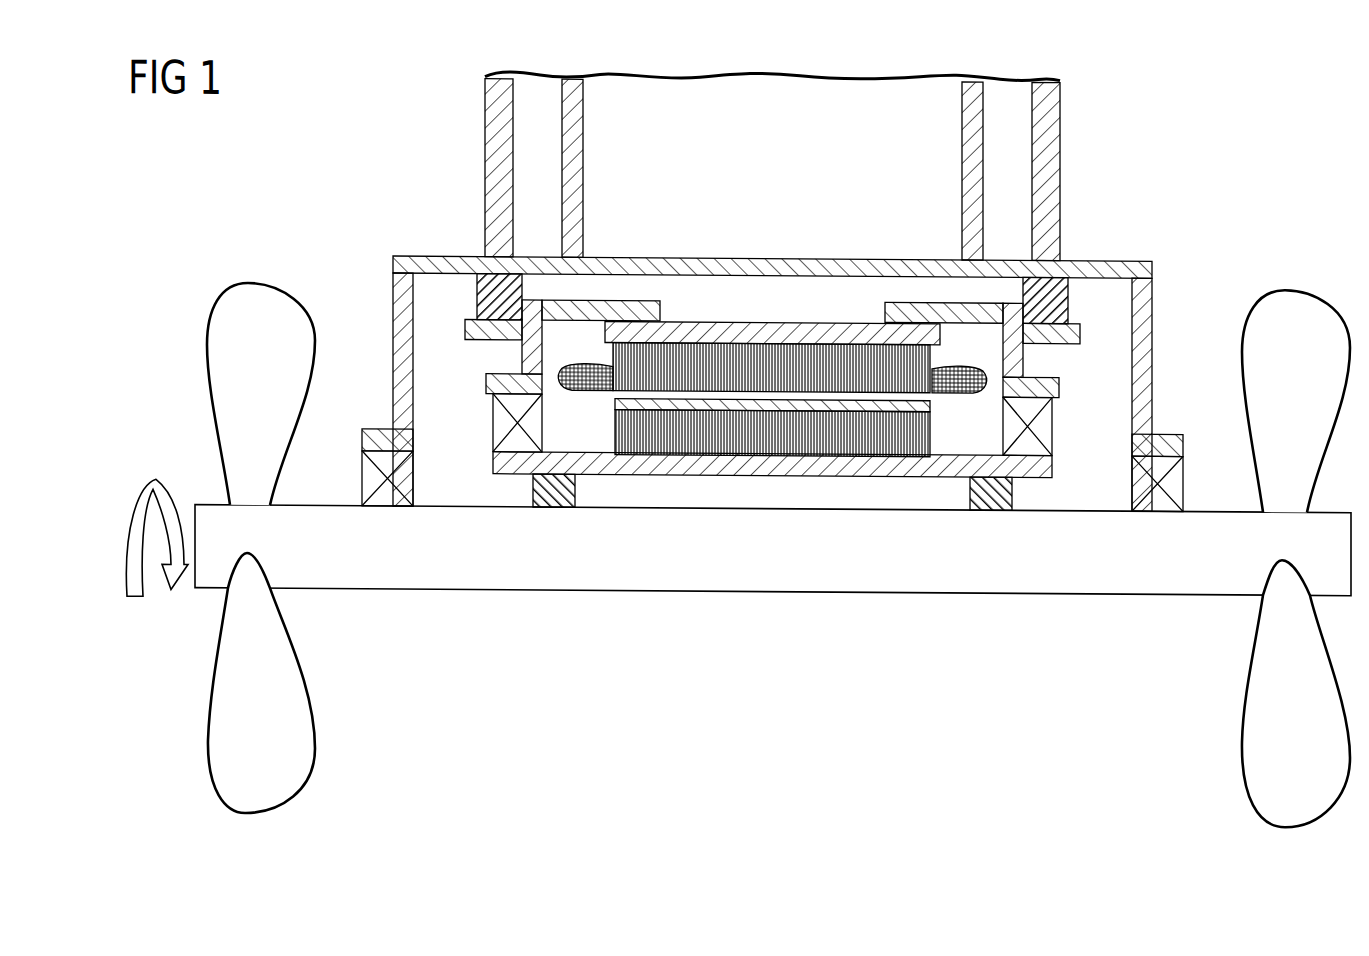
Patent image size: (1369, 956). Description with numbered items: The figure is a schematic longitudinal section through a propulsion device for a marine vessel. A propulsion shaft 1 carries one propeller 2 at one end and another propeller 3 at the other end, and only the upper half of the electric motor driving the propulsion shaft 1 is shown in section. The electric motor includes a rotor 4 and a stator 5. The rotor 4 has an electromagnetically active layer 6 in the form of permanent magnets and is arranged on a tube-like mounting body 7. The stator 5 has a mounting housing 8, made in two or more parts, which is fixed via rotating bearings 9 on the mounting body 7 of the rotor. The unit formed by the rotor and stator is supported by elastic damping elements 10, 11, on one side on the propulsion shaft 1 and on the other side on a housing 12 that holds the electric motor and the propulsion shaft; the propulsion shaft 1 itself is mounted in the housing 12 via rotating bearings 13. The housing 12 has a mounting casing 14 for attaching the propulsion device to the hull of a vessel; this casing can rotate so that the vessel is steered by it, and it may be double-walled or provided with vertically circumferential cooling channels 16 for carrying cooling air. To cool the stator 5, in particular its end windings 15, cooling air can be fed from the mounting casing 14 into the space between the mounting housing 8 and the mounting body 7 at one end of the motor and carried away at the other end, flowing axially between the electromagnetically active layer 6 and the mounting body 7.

The propulsion shaft 1 is at (662, 580).
The propeller 2 is at (298, 742).
The propeller 3 is at (1262, 752).
The rotor 4 is at (830, 437).
The stator 5 is at (783, 353).
The electromagnetically active layer 6 is at (615, 405).
The mounting body 7 is at (712, 458).
The mounting housing 8 is at (636, 310).
The rotating bearings 9 is at (497, 423).
The elastic damping elements 10 is at (533, 488).
The elastic damping elements 11 is at (477, 292).
The housing 12 is at (1093, 262).
The rotating bearings 13 is at (372, 481).
The mounting casing 14 is at (1047, 107).
The end windings 15 is at (567, 388).
The cooling channels 16 is at (535, 175).